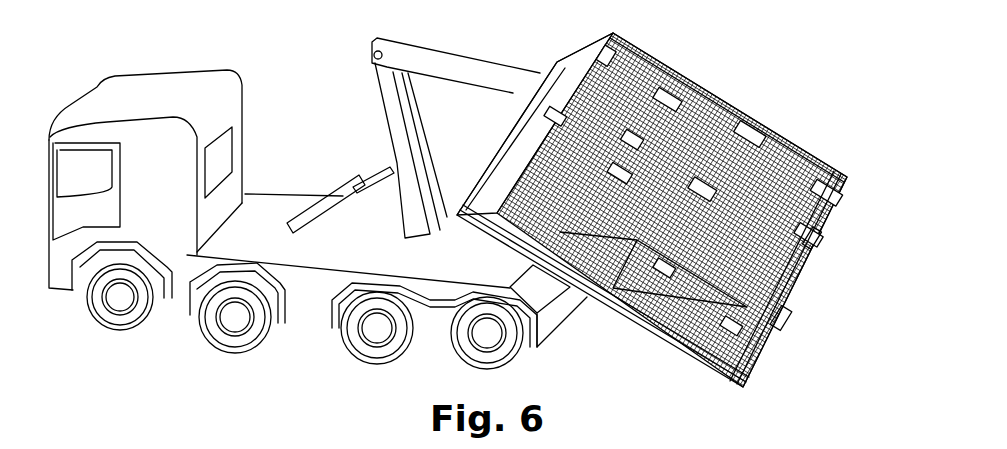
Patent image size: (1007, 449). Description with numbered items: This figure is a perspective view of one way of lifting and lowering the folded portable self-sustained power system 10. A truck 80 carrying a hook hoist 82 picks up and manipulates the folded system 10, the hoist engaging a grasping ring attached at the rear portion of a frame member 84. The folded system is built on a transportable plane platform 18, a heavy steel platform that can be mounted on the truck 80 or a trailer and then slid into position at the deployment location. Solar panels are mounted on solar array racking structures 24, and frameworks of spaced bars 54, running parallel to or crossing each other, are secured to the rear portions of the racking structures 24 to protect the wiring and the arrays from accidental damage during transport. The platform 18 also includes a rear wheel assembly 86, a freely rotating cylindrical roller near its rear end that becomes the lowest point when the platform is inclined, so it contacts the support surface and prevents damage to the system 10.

The portable self-sustained power system 10 is at (752, 84).
The transportable plane platform 18 is at (787, 350).
The solar array racking structure 24 is at (863, 162).
The framework of spaced bars 54 is at (590, 85).
The truck 80 is at (160, 90).
The hook hoist 82 is at (377, 107).
The frame member 84 is at (537, 80).
The rear wheel assembly 86 is at (800, 338).